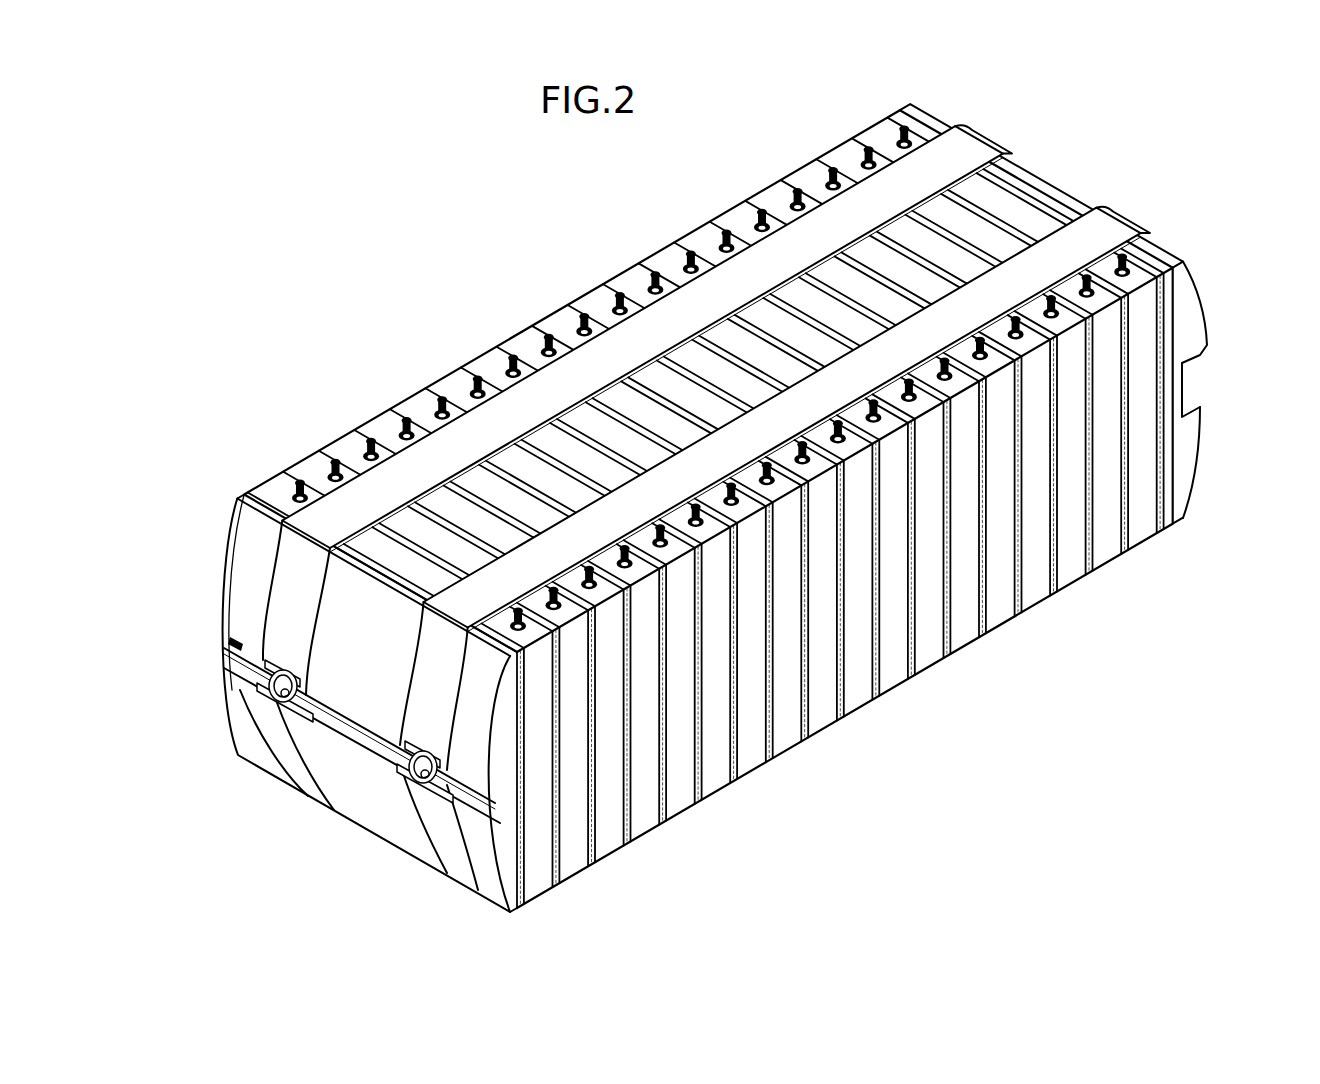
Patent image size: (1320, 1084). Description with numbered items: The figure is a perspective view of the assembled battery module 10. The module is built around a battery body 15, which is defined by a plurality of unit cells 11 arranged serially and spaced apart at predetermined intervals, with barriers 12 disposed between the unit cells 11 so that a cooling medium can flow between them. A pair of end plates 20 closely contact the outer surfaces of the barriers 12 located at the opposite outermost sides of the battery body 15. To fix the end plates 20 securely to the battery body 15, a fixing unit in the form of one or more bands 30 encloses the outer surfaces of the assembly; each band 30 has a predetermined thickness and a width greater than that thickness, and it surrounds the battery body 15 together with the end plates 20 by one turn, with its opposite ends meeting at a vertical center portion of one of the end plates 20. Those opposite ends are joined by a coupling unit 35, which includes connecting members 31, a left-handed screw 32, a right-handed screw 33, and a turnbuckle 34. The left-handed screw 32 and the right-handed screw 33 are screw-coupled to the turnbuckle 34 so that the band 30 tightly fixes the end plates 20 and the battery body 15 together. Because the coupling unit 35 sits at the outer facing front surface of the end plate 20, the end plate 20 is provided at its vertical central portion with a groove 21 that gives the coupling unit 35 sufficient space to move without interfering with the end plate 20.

The battery module 10 is at (565, 186).
The unit cell 11 is at (783, 188).
The barrier 12 is at (650, 266).
The battery body 15 is at (553, 294).
The end plate 20 is at (1188, 457).
The groove 21 is at (1190, 376).
The band 30 is at (283, 592).
The connecting member 31 is at (262, 660).
The left-handed screw 32 is at (268, 677).
The right-handed screw 33 is at (283, 704).
The turnbuckle 34 is at (276, 689).
The coupling unit 35 is at (237, 641).